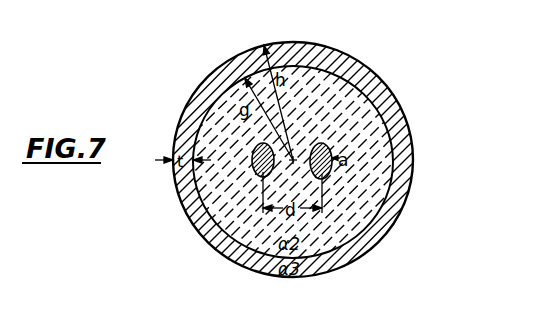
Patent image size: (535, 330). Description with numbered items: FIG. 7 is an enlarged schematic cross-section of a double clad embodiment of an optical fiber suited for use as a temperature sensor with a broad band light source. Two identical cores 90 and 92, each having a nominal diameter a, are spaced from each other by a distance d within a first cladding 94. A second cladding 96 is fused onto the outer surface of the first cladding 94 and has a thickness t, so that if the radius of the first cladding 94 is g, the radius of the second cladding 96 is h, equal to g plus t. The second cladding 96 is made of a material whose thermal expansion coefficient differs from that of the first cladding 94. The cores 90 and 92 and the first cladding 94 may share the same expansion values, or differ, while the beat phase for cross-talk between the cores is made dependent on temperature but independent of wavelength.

The core 90 is at (325, 168).
The core 92 is at (258, 172).
The cladding 94 is at (355, 105).
The second cladding 96 is at (395, 130).